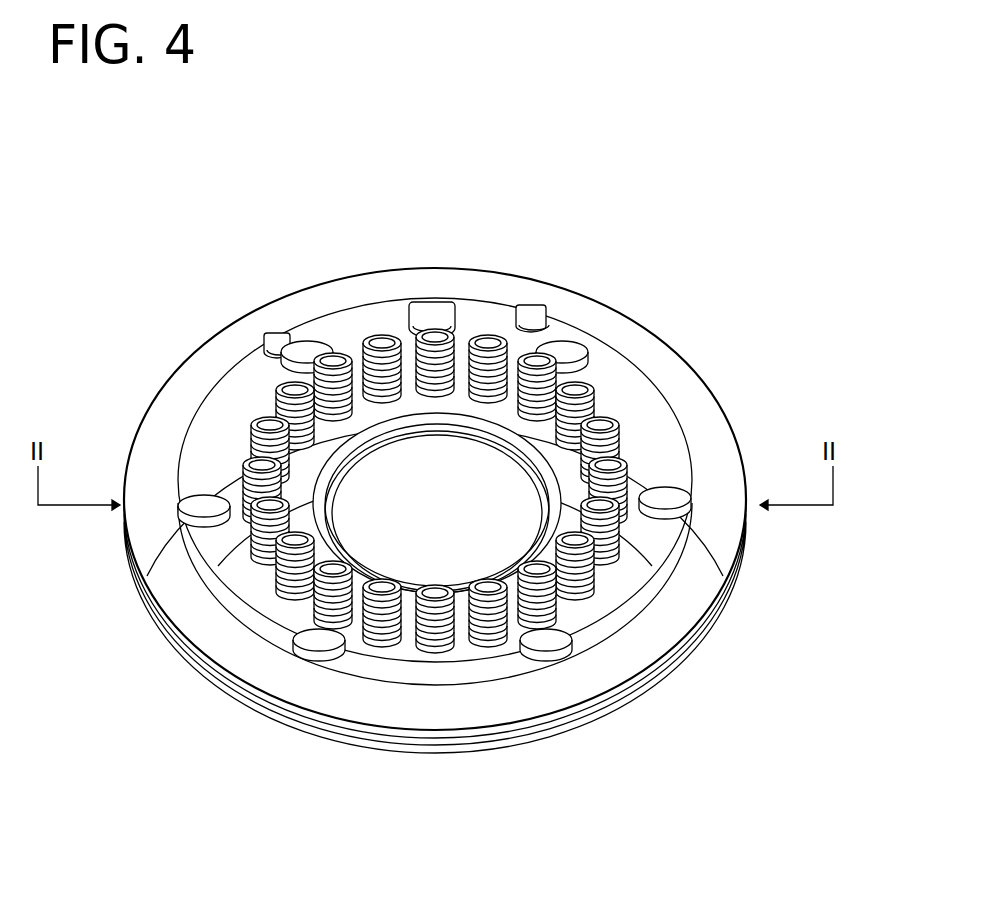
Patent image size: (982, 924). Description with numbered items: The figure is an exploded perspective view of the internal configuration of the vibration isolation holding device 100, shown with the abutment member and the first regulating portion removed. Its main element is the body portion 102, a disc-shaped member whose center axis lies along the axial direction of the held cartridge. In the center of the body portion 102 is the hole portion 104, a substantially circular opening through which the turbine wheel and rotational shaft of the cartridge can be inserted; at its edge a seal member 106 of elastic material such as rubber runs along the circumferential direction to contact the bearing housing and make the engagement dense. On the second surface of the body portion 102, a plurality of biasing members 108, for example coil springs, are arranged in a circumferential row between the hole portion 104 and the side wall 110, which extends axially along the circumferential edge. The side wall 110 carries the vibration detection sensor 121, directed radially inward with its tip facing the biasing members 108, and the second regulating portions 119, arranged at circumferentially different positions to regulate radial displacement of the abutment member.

The vibration isolation holding device 100 is at (742, 279).
The body portion 102 is at (627, 415).
The hole portion 104 is at (455, 529).
The seal member 106 is at (397, 431).
The biasing member 108 is at (493, 398).
The side wall 110 is at (242, 662).
The second regulating portion 119 is at (557, 660).
The vibration detection sensor 121 is at (437, 313).